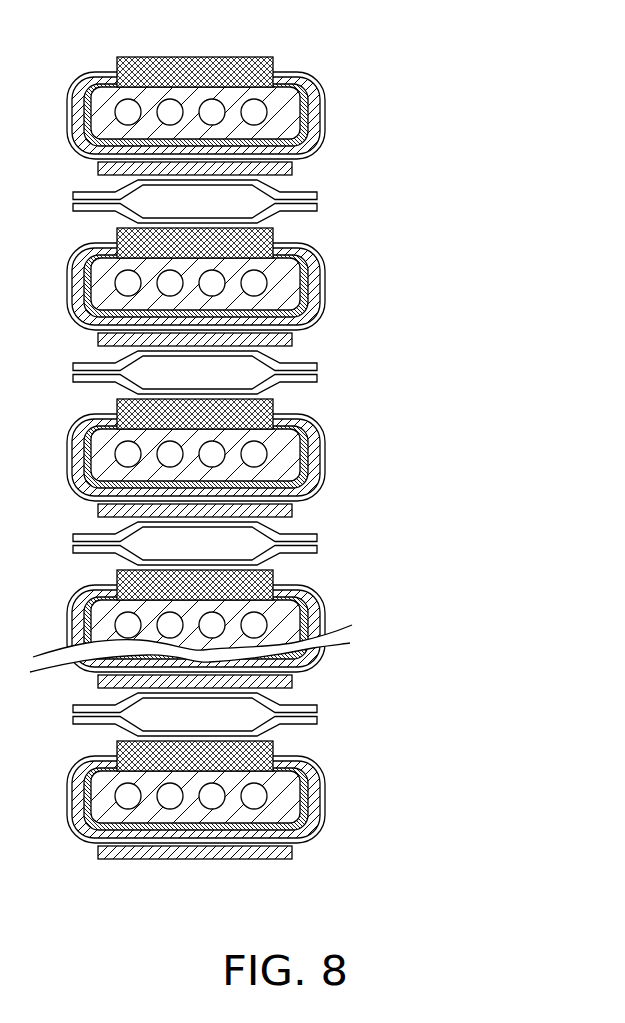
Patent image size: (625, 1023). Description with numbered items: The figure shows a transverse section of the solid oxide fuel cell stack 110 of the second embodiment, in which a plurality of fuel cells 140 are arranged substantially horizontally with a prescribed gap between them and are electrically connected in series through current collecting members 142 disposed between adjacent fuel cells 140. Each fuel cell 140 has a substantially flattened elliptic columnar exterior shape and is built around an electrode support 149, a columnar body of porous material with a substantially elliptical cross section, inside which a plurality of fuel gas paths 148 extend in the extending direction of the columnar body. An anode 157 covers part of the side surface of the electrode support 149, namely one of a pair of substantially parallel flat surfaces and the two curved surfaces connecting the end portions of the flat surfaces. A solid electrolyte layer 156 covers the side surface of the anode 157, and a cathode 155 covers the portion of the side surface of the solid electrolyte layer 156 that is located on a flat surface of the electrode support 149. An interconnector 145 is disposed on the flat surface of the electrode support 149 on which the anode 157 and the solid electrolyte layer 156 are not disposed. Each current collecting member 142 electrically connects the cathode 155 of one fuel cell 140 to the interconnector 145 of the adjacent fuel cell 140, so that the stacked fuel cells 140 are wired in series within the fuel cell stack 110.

The solid oxide fuel cell stack 110 is at (377, 73).
The fuel cell 140 is at (458, 360).
The current collecting member 142 is at (299, 205).
The interconnector 145 is at (273, 410).
The fuel gas path 148 is at (305, 447).
The electrode support 149 is at (255, 453).
The cathode 155 is at (307, 498).
The solid electrolyte layer 156 is at (322, 490).
The anode 157 is at (280, 467).